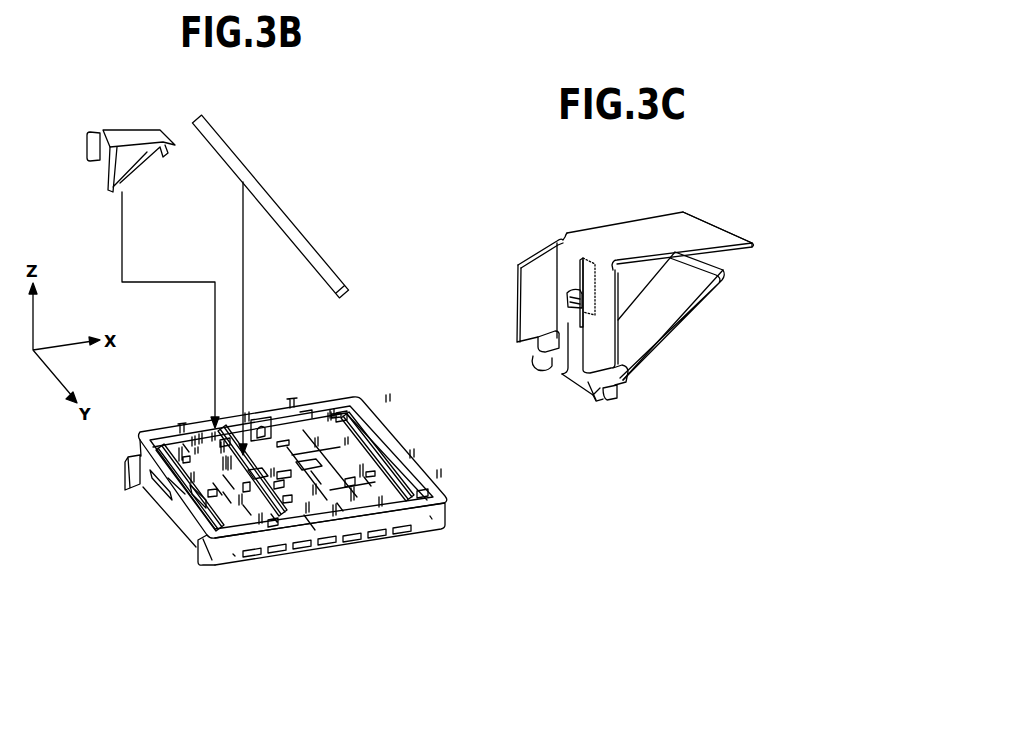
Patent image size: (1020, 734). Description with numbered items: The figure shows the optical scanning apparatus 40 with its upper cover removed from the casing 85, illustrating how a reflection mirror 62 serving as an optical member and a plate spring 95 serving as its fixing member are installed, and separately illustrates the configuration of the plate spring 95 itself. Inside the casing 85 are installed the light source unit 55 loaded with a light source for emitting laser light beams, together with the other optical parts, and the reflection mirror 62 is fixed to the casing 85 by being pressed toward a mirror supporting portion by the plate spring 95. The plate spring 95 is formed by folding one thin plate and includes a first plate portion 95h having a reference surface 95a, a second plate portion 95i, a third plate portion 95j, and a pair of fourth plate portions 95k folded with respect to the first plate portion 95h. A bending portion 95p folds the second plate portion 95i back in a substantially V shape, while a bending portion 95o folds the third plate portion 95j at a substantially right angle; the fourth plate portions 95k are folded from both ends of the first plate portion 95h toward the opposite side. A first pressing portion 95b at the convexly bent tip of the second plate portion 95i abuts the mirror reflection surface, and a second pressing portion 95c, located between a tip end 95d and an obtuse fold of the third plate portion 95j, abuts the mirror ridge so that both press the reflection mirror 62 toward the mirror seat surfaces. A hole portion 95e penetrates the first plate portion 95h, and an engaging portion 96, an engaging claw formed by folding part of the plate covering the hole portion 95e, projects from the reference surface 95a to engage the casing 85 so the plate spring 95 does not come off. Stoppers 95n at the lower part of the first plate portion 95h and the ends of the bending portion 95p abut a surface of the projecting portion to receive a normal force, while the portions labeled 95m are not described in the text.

In FIG. 3B, the optical scanning apparatus 40 is at (137, 505).
In FIG. 3B, the light source unit 55 is at (243, 408).
In FIG. 3B, the reflection mirror 62 is at (255, 185).
In FIG. 3B, the casing 85 is at (430, 527).
In FIG. 3B, the plate spring 95 is at (133, 133).
In FIG. 3C, the plate spring 95 is at (608, 325).
In FIG. 3C, the reference surface 95a is at (560, 368).
In FIG. 3C, the first pressing portion 95b is at (724, 272).
In FIG. 3C, the second pressing portion 95c is at (728, 228).
In FIG. 3C, the tip end 95d is at (755, 242).
In FIG. 3C, the hole portion 95e is at (590, 268).
In FIG. 3C, the first plate portion 95h is at (590, 388).
In FIG. 3C, the second plate portion 95i is at (667, 308).
In FIG. 3C, the third plate portion 95j is at (632, 230).
In FIG. 3C, the fourth plate portions 95k is at (527, 300).
In FIG. 3C, the hook 95m is at (535, 345).
In FIG. 3C, the stoppers 95n is at (536, 363).
In FIG. 3C, the bending portion 95o is at (566, 242).
In FIG. 3C, the bending portion 95p is at (597, 402).
In FIG. 3C, the engaging portion 96 is at (567, 298).